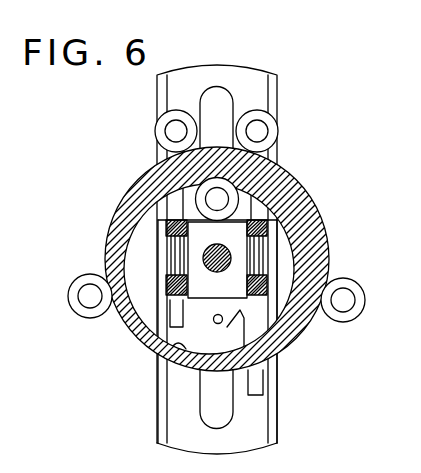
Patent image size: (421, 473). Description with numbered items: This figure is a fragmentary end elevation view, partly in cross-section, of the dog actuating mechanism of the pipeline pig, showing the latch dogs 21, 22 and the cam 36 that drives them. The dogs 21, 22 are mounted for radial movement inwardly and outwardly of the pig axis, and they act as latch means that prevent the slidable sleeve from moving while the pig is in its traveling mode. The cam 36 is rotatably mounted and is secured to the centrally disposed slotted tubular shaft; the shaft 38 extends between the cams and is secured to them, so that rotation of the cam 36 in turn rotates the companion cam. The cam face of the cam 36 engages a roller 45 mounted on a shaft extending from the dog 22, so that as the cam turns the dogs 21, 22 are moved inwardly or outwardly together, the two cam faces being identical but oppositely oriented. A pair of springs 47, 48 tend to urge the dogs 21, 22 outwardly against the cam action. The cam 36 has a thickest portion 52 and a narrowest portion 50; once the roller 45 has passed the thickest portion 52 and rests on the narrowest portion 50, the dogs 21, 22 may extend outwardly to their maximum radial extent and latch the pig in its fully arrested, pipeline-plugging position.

The dog 21 is at (275, 392).
The dog 22 is at (278, 95).
The cam 36 is at (138, 198).
The shaft 38 is at (232, 258).
The roller 45 is at (228, 195).
The spring 47 is at (167, 228).
The spring 48 is at (263, 232).
The narrowest portion of cam 50 is at (175, 340).
The thickest portion of cam 52 is at (235, 321).